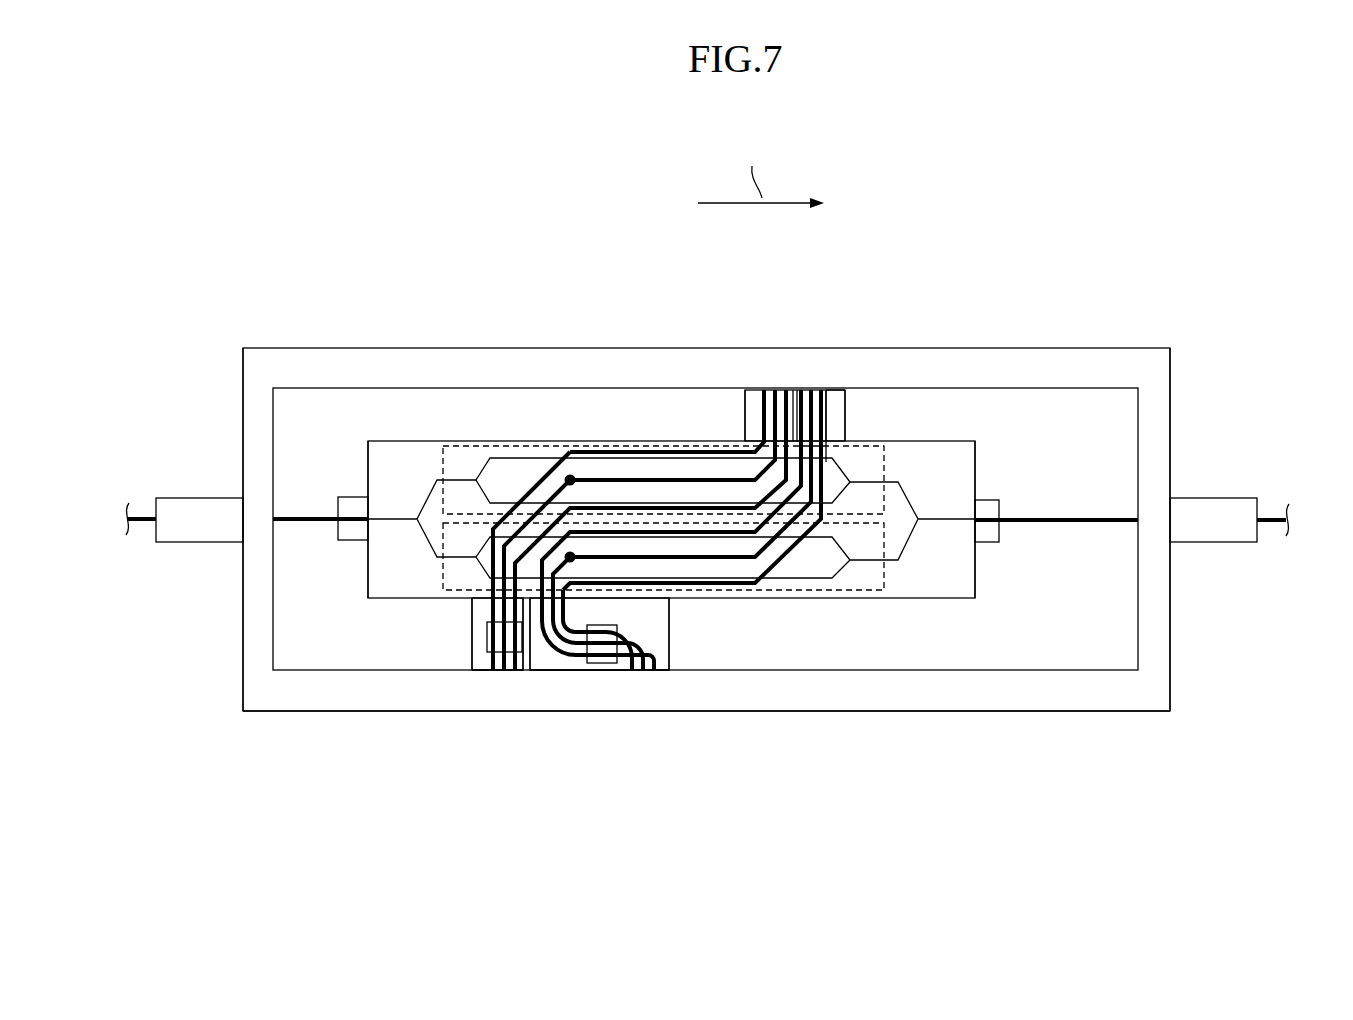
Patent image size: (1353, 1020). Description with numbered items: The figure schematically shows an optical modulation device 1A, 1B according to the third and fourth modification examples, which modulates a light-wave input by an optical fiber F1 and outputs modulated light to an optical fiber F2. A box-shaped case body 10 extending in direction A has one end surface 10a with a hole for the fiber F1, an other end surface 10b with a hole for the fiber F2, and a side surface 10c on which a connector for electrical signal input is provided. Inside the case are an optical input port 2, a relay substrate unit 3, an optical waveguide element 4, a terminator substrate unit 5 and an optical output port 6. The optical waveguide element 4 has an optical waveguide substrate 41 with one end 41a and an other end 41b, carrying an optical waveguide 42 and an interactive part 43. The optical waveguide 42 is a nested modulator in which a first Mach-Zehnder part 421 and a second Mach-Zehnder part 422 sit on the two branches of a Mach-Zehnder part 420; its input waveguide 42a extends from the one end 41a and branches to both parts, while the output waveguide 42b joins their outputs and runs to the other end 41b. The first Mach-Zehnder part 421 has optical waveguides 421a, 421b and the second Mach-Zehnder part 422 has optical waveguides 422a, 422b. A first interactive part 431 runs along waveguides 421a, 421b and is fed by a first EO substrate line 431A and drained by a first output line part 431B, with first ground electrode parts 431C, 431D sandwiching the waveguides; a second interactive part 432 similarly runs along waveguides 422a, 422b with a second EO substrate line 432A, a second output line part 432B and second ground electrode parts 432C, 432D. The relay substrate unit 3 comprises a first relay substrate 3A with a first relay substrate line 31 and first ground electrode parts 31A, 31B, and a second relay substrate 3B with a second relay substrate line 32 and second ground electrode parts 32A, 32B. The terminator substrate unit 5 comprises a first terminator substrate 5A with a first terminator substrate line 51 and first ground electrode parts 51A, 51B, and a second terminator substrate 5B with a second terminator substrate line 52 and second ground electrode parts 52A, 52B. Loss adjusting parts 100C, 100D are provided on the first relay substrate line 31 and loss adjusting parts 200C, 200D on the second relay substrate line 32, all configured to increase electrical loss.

The optical modulation device 1A is at (1280, 165).
The optical modulation device 1B is at (704, 485).
The case body 10 is at (1098, 363).
The one end surface 10a is at (243, 683).
The other end surface 10b is at (1172, 405).
The side surface 10c is at (997, 713).
The optical fiber F1 is at (142, 512).
The optical fiber F2 is at (1275, 520).
The optical input port 2 is at (337, 508).
The optical output port 6 is at (992, 497).
The optical waveguide element 4 is at (393, 450).
The optical waveguide substrate 41 is at (380, 563).
The one end 41a is at (366, 594).
The other end 41b is at (978, 567).
The optical waveguide 42 is at (424, 455).
The Mach-Zehnder part 420 is at (629, 522).
The input waveguide 42a is at (402, 519).
The output waveguide 42b is at (947, 518).
The second Mach-Zehnder part 422 is at (670, 445).
The optical waveguide 422a is at (563, 501).
The optical waveguide 422b is at (499, 456).
The first Mach-Zehnder part 421 is at (855, 595).
The optical waveguide 421a is at (780, 574).
The optical waveguide 421b is at (800, 545).
The interactive part 43 is at (603, 468).
The second interactive part 432 is at (658, 480).
The second EO substrate line 432A is at (517, 525).
The second output line part 432B is at (755, 450).
The second ground electrode part 432C is at (566, 452).
The second ground electrode part 432D is at (495, 503).
The first interactive part 431 is at (703, 562).
The first EO substrate line 431A is at (563, 575).
The first output line part 431B is at (833, 537).
The first ground electrode part 431C is at (830, 575).
The first ground electrode part 431D is at (835, 460).
The terminator substrate unit 5 is at (855, 415).
The first terminator substrate 5A is at (842, 397).
The second terminator substrate 5B is at (754, 402).
The first terminator substrate line 51 is at (837, 407).
The first ground electrode part 51A is at (823, 427).
The first ground electrode part 51B is at (803, 392).
The second terminator substrate line 52 is at (775, 392).
The second ground electrode part 52A is at (785, 392).
The second ground electrode part 52B is at (767, 392).
The relay substrate unit 3 is at (682, 635).
The first relay substrate 3A is at (667, 662).
The second relay substrate 3B is at (483, 663).
The first relay substrate line 31 is at (652, 667).
The first ground electrode part 31A is at (680, 663).
The first ground electrode part 31B is at (630, 668).
The second relay substrate line 32 is at (498, 665).
The second ground electrode part 32A is at (518, 660).
The second ground electrode part 32B is at (478, 608).
The loss adjusting part 100C is at (597, 663).
The loss adjusting part 100D is at (577, 727).
The loss adjusting part 200C is at (485, 638).
The loss adjusting part 200D is at (417, 642).